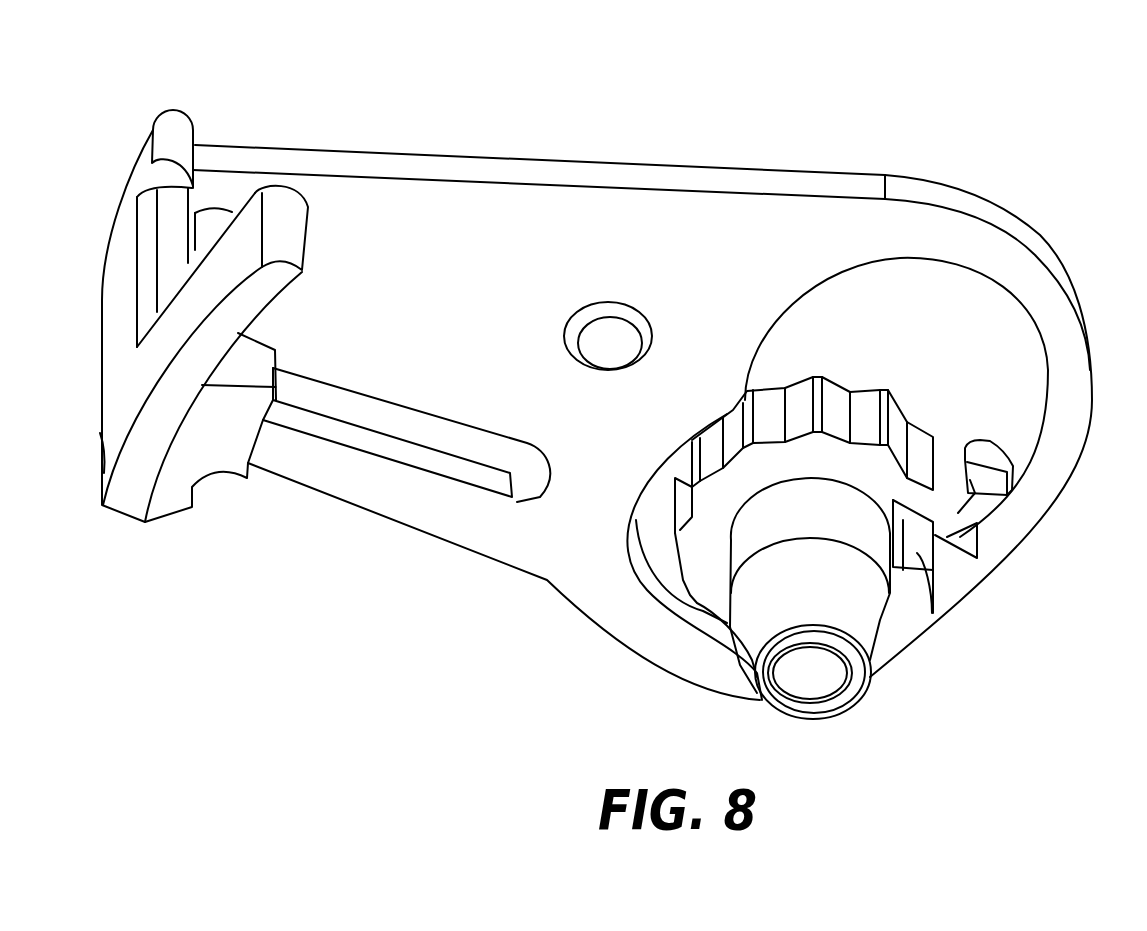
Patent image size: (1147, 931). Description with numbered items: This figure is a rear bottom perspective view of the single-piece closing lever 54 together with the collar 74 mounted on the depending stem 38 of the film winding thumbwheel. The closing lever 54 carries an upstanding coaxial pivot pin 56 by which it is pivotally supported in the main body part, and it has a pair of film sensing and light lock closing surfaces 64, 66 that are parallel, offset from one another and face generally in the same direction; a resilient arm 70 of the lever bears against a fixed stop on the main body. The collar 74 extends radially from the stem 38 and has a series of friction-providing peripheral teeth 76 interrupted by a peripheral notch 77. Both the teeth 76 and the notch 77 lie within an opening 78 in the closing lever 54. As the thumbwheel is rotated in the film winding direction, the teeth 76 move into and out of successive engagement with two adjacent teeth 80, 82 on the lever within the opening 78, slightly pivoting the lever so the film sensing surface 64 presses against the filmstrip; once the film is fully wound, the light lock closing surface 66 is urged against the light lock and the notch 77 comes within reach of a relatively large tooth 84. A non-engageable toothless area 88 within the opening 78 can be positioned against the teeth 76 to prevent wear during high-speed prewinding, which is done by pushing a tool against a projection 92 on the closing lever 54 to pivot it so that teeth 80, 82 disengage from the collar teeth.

The depending stem 38 is at (863, 690).
The closing lever 54 is at (450, 153).
The pivot pin 56 is at (600, 352).
The film sensing surface 64 is at (295, 227).
The light lock closing surface 66 is at (265, 368).
The resilient arm 70 is at (363, 512).
The collar 74 is at (807, 378).
The peripheral teeth 76 is at (733, 413).
The peripheral notch 77 is at (932, 613).
The opening 78 is at (950, 305).
The tooth 80 is at (945, 535).
The tooth 82 is at (942, 580).
The large tooth 84 is at (1013, 467).
The toothless area 88 is at (697, 617).
The projection 92 is at (170, 143).